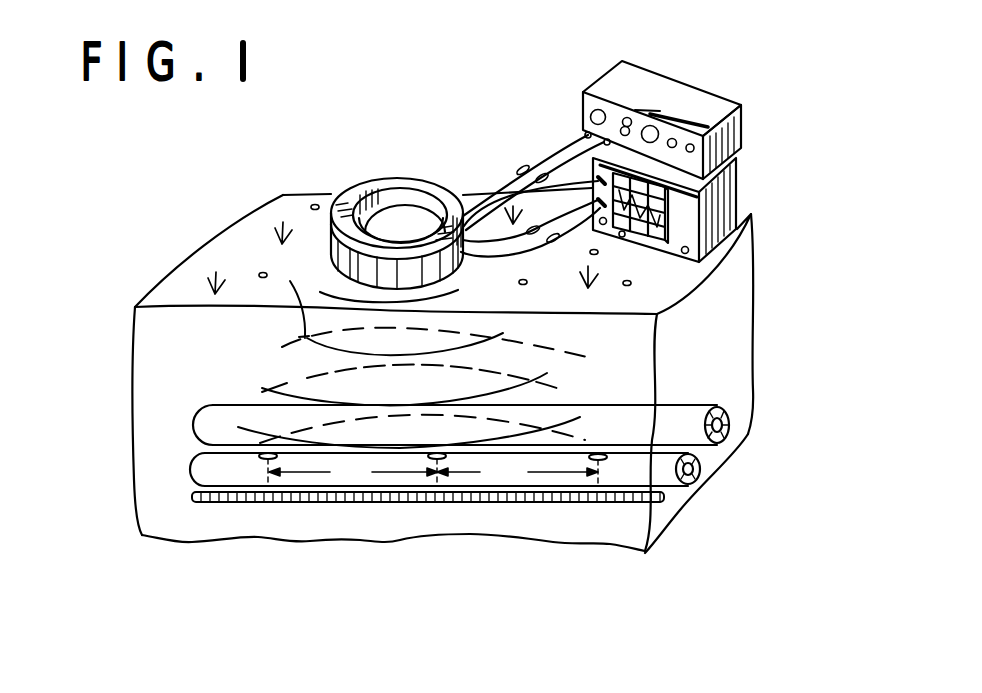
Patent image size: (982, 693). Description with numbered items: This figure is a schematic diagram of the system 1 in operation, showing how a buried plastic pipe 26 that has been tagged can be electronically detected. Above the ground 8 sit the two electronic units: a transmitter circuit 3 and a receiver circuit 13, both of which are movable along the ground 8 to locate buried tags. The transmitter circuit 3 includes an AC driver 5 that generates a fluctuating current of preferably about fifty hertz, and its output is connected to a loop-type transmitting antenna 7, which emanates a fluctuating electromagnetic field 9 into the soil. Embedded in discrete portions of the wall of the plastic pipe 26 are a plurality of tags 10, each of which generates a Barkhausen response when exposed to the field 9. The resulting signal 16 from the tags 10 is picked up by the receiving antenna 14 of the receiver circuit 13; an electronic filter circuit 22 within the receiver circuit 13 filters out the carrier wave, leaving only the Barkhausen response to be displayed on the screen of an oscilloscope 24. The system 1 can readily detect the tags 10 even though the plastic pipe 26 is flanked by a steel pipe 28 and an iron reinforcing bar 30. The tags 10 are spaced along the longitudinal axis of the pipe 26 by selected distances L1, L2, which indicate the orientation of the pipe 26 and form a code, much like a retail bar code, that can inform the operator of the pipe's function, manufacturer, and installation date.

The system 1 is at (440, 150).
The transmitter circuit 3 is at (662, 95).
The AC driver 5 is at (686, 100).
The transmitting antenna 7 is at (363, 192).
The ground 8 is at (283, 196).
The electromagnetic field 9 is at (333, 289).
The tag 10 is at (260, 457).
The receiver circuit 13 is at (705, 203).
The receiving antenna 14 is at (460, 263).
The signal 16 is at (304, 379).
The electronic filter circuit 22 is at (730, 215).
The oscilloscope 24 is at (657, 248).
The plastic pipe 26 is at (670, 474).
The steel pipe 28 is at (695, 434).
The iron reinforcing bar 30 is at (665, 503).
The selected distance L1 is at (353, 469).
The selected distance L2 is at (517, 469).